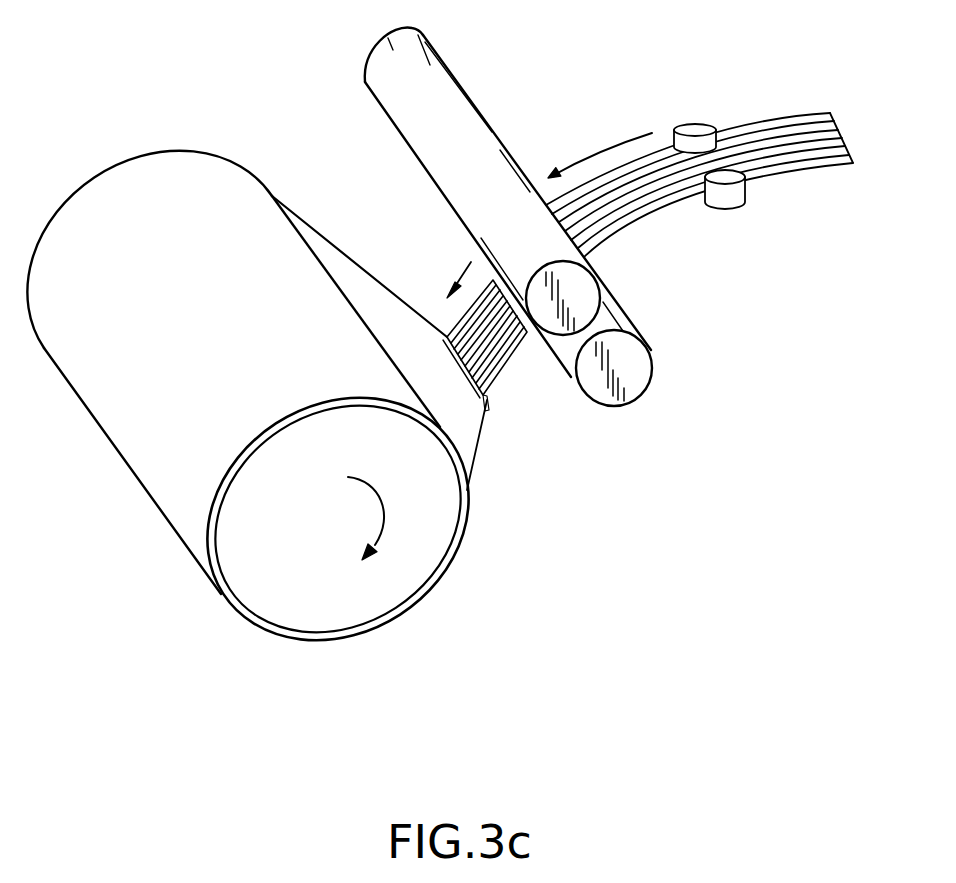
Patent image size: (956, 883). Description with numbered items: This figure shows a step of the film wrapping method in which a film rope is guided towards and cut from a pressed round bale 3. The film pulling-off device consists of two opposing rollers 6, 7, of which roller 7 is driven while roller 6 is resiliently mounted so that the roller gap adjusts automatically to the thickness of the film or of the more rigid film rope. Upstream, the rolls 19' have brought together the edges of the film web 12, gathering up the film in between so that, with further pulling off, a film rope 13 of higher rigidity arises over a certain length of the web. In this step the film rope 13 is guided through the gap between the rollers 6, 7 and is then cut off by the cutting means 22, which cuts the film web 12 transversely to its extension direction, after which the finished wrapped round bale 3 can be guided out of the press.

The round bale 3 is at (378, 575).
The roller 6 is at (587, 287).
The roller 7 is at (641, 372).
The film web 12 is at (145, 452).
The film rope 13 is at (800, 130).
The rolls 19' is at (715, 158).
The cutting means 22 is at (447, 337).